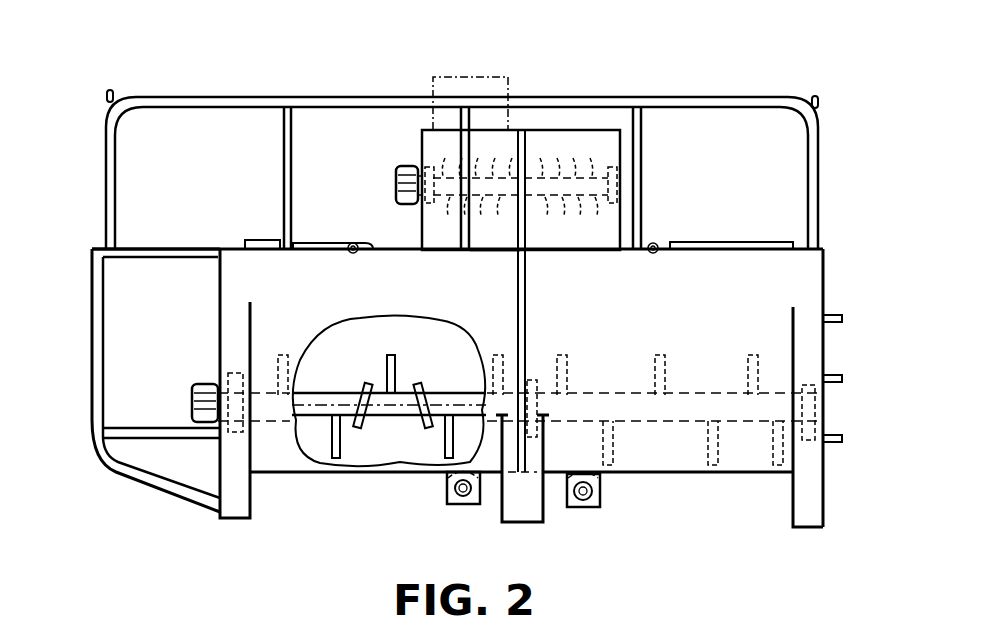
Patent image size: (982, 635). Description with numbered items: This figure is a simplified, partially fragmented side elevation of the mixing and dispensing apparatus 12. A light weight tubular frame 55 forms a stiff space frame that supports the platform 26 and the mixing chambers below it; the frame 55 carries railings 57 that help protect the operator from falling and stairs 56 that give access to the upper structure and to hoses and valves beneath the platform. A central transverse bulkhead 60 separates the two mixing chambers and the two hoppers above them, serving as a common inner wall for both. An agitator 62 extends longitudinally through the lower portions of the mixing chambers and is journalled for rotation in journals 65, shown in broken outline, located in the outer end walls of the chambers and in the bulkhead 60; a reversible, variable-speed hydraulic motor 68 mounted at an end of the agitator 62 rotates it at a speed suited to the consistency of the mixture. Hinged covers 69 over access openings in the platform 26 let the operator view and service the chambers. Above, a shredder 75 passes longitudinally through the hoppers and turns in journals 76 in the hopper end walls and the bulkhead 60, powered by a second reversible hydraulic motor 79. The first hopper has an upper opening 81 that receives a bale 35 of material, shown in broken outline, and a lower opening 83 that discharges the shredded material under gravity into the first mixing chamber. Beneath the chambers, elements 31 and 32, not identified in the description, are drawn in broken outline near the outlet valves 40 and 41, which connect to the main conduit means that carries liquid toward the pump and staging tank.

The mixing and dispensing apparatus 12 is at (592, 76).
The platform 26 is at (232, 248).
The bearing 31 is at (448, 482).
The bearing 32 is at (600, 488).
The bale 35 is at (446, 73).
The outlet valve 40 is at (470, 507).
The outlet valve 41 is at (590, 508).
The tubular frame 55 is at (137, 253).
The stairs 56 is at (843, 378).
The railings 57 is at (330, 97).
The central transverse bulkhead 60 is at (528, 277).
The agitator 62 is at (388, 405).
The journals 65 is at (235, 378).
The hydraulic motor 68 is at (192, 400).
The hinged covers 69 is at (326, 241).
The shredder 75 is at (585, 172).
The journals 76 is at (428, 165).
The hydraulic motor 79 is at (396, 178).
The upper opening 81 is at (482, 130).
The lower opening 83 is at (492, 254).